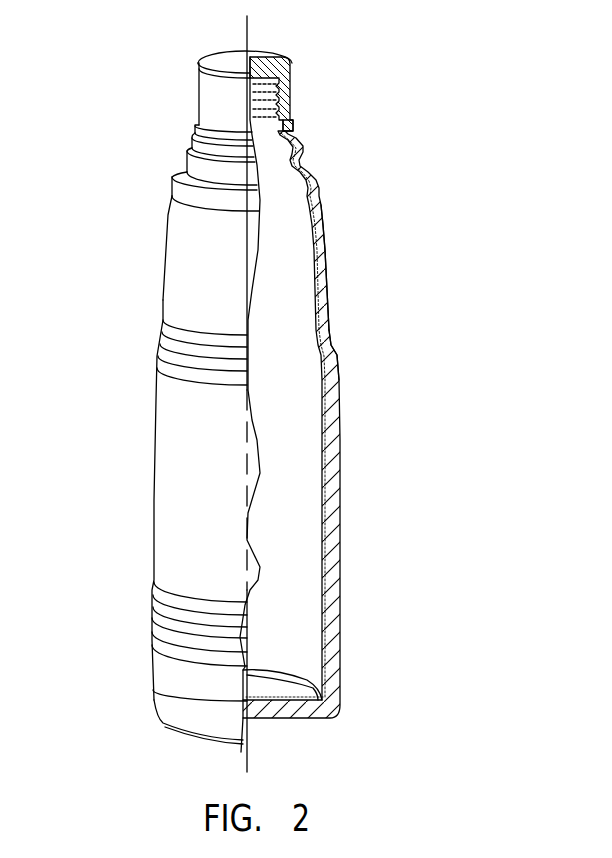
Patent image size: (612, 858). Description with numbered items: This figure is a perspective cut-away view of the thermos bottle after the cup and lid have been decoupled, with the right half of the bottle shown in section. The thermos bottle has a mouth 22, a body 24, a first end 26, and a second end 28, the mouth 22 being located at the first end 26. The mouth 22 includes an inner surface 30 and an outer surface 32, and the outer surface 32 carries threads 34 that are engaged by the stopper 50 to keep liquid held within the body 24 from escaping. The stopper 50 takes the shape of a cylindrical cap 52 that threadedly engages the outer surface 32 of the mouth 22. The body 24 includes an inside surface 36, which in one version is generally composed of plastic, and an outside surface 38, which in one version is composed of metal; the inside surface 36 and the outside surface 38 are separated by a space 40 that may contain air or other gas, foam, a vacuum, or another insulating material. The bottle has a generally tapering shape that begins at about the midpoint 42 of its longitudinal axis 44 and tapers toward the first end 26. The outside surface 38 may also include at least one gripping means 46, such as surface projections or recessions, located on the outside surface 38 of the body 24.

The mouth 22 is at (287, 106).
The body 24 is at (364, 502).
The first end 26 is at (144, 220).
The second end 28 is at (131, 683).
The inner surface 30 is at (252, 54).
The outer surface 32 is at (284, 83).
The threads 34 is at (294, 118).
The inside surface 36 is at (323, 271).
The outside surface 38 is at (330, 337).
The space 40 is at (320, 297).
The midpoint 42 is at (250, 425).
The longitudinal axis 44 is at (246, 386).
The gripping means 46 is at (153, 618).
The stopper 50 is at (300, 58).
The cylindrical cap 52 is at (253, 90).